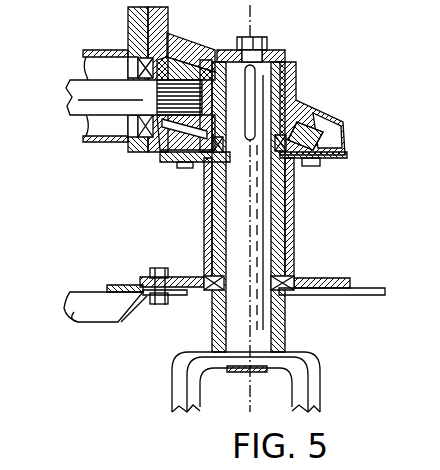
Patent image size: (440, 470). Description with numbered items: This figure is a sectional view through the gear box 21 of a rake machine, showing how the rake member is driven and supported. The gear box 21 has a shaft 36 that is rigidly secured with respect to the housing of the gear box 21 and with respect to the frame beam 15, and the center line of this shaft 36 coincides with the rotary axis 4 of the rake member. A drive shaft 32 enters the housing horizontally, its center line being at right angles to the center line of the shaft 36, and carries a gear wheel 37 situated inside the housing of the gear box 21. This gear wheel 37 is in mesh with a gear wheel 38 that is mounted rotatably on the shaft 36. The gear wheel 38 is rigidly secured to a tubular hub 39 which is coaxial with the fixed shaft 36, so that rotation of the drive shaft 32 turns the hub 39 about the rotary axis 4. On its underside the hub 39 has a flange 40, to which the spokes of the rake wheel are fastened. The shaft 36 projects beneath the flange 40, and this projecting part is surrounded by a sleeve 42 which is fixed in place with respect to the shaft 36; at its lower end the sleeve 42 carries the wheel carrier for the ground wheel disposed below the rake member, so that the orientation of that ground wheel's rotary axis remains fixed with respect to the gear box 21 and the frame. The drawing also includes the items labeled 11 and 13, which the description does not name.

The rotary axis 4 is at (255, 17).
The bracket 11 is at (79, 290).
The cap 13 is at (315, 391).
The frame beam 15 is at (86, 63).
The gear box 21 is at (299, 103).
The drive shaft 32 is at (80, 90).
The shaft 36 is at (232, 195).
The gear wheel 37 is at (181, 62).
The gear wheel 38 is at (313, 124).
The tubular hub 39 is at (317, 231).
The flange 40 is at (350, 278).
The sleeve 42 is at (210, 321).